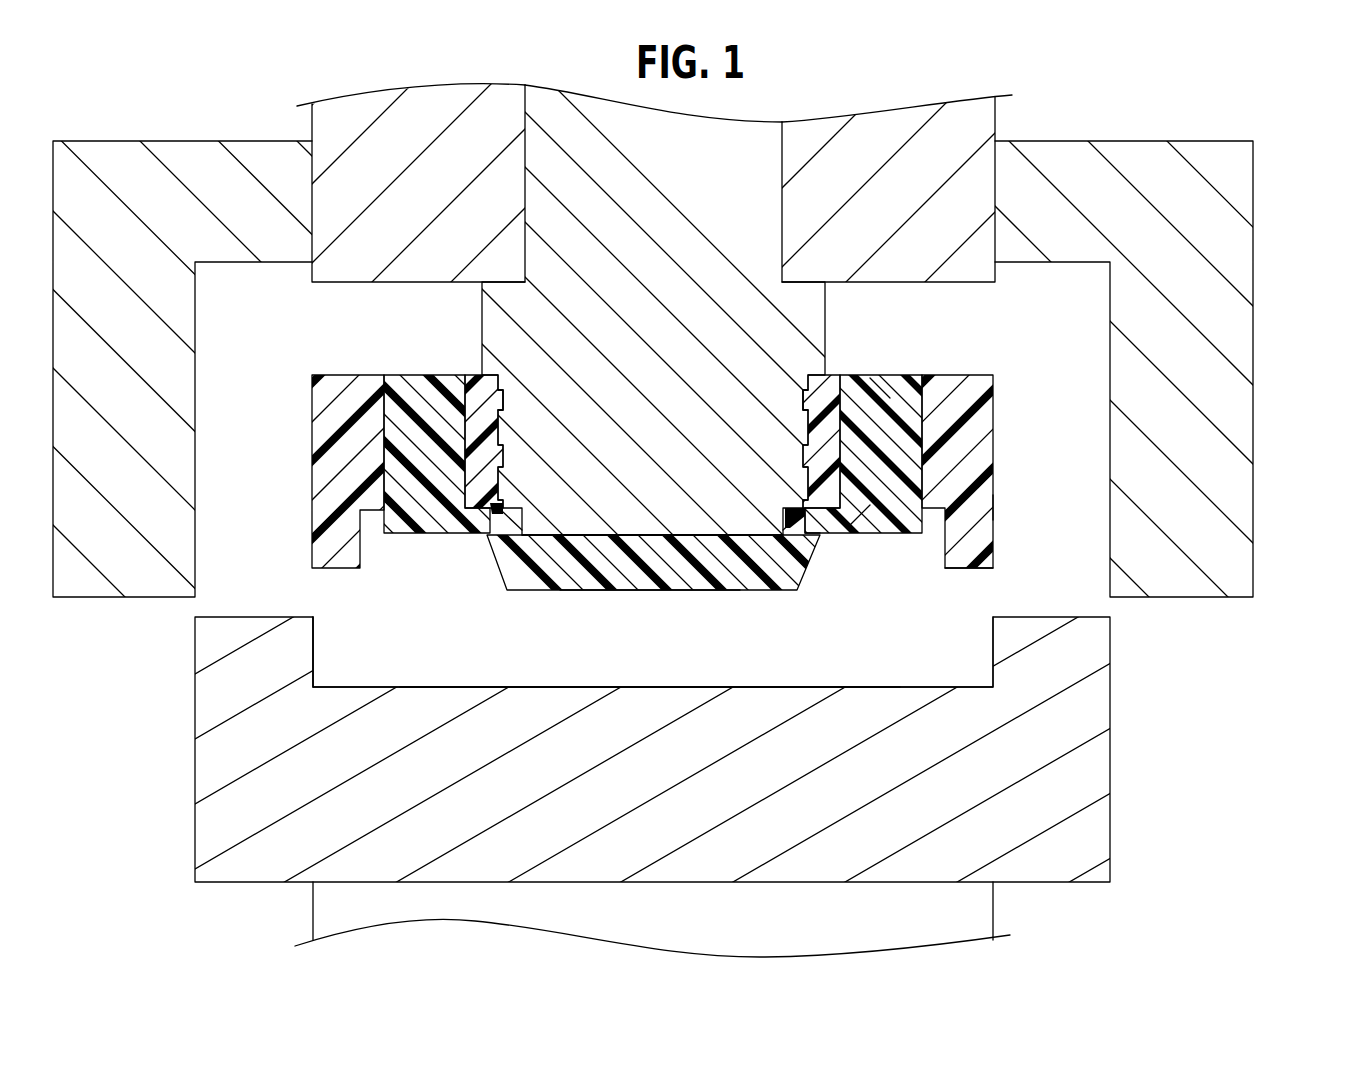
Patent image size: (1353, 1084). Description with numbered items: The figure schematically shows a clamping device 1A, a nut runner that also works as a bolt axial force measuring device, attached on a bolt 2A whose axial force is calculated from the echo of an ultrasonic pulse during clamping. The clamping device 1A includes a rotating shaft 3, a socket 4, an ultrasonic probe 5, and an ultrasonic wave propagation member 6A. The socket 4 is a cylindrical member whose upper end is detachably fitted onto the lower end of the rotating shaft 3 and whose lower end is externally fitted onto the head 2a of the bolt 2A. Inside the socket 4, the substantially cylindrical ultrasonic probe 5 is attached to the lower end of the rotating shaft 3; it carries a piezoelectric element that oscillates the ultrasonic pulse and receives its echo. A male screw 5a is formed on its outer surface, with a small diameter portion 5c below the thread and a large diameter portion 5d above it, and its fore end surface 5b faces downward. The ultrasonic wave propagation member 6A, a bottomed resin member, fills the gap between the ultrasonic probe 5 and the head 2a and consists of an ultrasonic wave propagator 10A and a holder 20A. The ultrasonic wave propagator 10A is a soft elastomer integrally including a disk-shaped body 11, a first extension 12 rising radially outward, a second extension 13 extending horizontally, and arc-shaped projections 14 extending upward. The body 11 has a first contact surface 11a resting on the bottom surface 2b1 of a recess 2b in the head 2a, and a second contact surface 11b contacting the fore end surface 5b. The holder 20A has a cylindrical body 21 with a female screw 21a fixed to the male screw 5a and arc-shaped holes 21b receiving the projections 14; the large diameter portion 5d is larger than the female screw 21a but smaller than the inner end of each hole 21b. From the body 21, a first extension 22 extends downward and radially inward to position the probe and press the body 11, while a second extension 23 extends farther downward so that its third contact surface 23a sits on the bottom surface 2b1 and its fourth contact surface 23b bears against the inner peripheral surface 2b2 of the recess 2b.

The clamping device 1A is at (1270, 133).
The bolt 2A is at (1135, 888).
The head 2a is at (1080, 773).
The recess 2b is at (968, 687).
The bottom surface 2b1 is at (495, 687).
The inner peripheral surface 2b2 is at (315, 635).
The rotating shaft 3 is at (983, 128).
The socket 4 is at (1240, 412).
The ultrasonic probe 5 is at (773, 315).
The male screw 5a is at (806, 395).
The fore end surface 5b is at (583, 536).
The small diameter portion 5c is at (498, 510).
The large diameter portion 5d is at (481, 317).
The ultrasonic wave propagation member 6A is at (1003, 362).
The ultrasonic wave propagator 10A is at (505, 575).
The body 11 is at (758, 578).
The first contact surface 11a is at (633, 590).
The second contact surface 11b is at (705, 535).
The first extension 12 is at (810, 528).
The second extension 13 is at (878, 528).
The projection 14 is at (888, 395).
The holder 20A is at (330, 437).
The body 21 is at (983, 444).
The female screw 21a is at (505, 400).
The hole 21b is at (383, 395).
The first extension 22 is at (812, 505).
The second extension 23 is at (996, 556).
The third contact surface 23a is at (962, 572).
The fourth contact surface 23b is at (995, 508).